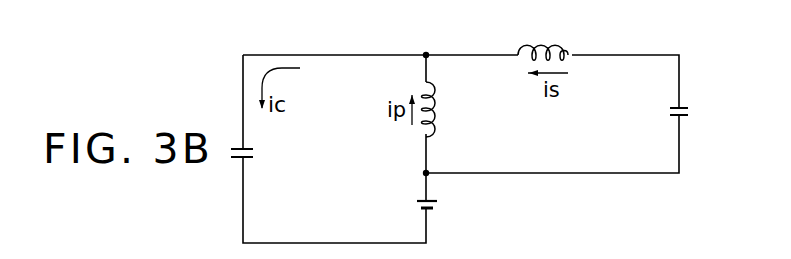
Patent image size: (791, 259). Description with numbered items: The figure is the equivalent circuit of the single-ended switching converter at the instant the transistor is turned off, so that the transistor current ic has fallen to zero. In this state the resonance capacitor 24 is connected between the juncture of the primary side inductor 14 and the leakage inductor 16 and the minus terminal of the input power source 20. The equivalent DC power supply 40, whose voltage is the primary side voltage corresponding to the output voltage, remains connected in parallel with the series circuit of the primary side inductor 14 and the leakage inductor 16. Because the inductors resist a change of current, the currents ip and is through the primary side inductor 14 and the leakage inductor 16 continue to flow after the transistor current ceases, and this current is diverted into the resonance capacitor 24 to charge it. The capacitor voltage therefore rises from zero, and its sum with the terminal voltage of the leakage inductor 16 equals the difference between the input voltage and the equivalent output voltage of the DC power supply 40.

The primary side inductor 14 is at (437, 103).
The leakage inductor 16 is at (549, 45).
The input power source 20 is at (437, 206).
The resonance capacitor 24 is at (254, 156).
The DC power supply 40 is at (689, 113).